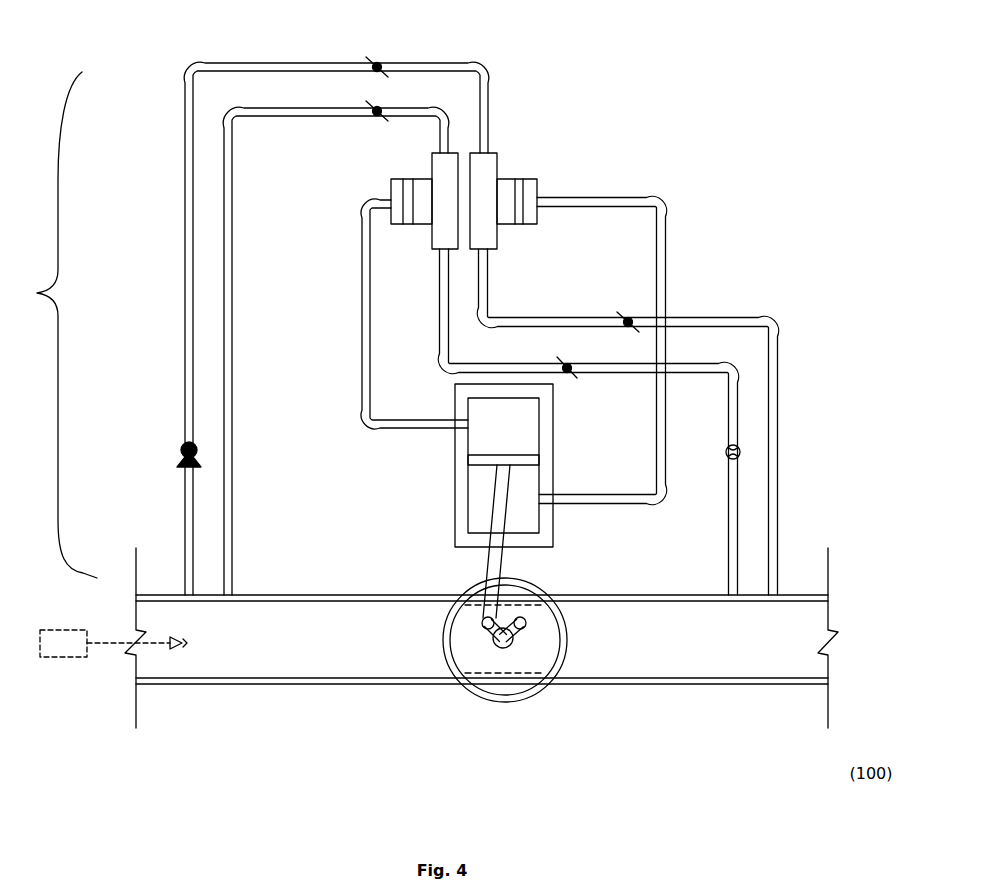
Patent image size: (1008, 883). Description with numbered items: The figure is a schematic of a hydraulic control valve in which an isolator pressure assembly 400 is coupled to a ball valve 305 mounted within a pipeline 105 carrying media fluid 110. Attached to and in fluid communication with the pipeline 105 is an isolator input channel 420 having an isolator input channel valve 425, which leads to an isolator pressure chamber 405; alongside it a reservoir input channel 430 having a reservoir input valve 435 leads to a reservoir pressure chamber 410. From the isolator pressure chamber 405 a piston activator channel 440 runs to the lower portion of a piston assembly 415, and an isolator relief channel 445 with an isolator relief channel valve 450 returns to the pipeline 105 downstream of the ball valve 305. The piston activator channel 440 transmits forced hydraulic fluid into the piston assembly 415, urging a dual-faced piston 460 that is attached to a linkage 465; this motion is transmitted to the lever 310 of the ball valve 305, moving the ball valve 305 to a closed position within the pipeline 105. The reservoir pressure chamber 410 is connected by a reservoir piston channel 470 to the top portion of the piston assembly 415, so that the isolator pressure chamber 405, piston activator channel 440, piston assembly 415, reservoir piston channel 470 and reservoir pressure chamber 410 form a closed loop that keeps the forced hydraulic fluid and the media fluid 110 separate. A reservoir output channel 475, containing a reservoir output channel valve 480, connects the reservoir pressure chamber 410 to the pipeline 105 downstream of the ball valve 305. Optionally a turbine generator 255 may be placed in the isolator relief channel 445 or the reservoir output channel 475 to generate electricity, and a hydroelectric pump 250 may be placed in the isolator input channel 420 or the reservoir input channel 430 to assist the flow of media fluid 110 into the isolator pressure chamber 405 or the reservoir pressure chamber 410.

The pipeline 105 is at (295, 680).
The media fluid 110 is at (113, 643).
The hydroelectric pump 250 is at (182, 448).
The turbine generator 255 is at (740, 448).
The ball valve 305 is at (533, 588).
The lever 310 is at (480, 625).
The isolator pressure assembly 400 is at (50, 325).
The isolator pressure chamber 405 is at (498, 177).
The reservoir pressure chamber 410 is at (391, 178).
The piston assembly 415 is at (553, 525).
The isolator input channel 420 is at (247, 63).
The isolator input channel valve 425 is at (377, 66).
The reservoir input channel 430 is at (228, 197).
The reservoir input valve 435 is at (377, 111).
The piston activator channel 440 is at (650, 197).
The isolator relief channel 445 is at (775, 323).
The isolator relief channel valve 450 is at (628, 322).
The dual-faced piston 460 is at (482, 460).
The linkage-2 465 is at (495, 563).
The reservoir piston channel 470 is at (365, 303).
The reservoir output channel 475 is at (683, 367).
The reservoir output channel valve 480 is at (567, 372).